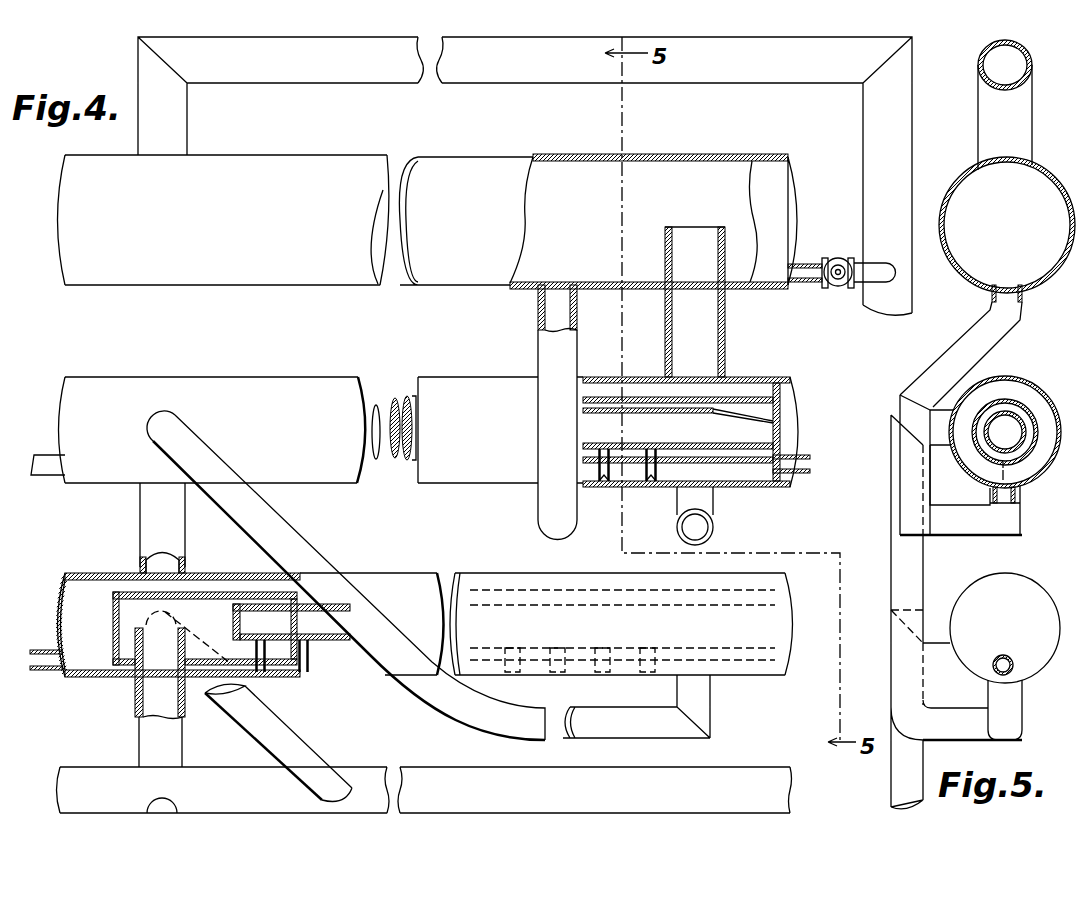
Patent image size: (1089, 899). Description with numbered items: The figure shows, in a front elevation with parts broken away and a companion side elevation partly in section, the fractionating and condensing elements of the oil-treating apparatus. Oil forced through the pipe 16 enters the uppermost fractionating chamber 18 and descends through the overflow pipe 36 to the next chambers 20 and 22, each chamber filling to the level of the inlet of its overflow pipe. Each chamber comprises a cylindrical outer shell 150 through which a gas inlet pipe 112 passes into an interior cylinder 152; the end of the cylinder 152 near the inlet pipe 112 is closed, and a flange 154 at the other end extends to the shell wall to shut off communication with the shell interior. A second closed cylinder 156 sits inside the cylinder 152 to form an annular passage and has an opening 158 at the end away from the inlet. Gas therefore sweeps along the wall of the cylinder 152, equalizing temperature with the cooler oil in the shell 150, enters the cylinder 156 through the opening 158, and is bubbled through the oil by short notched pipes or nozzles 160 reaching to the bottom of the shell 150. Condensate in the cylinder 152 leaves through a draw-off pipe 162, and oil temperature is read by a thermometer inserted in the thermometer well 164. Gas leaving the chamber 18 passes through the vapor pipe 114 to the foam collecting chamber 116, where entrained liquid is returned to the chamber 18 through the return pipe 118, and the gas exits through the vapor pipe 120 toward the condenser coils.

In FIG. 4, the vapor pipe 120 is at (353, 85).
In FIG. 5, the vapor pipe 120 is at (977, 90).
In FIG. 4, the foam collecting chamber 116 is at (454, 166).
In FIG. 5, the foam collecting chamber 116 is at (970, 178).
In FIG. 4, the return pipe 118 is at (545, 349).
In FIG. 5, the return pipe 118 is at (993, 339).
In FIG. 4, the vapor pipe 114 is at (726, 327).
In FIG. 4, the fractionating chamber 18 is at (283, 381).
In FIG. 5, the fractionating chamber 18 is at (1024, 388).
In FIG. 4, the interior cylinder 152 is at (405, 395).
In FIG. 5, the interior cylinder 152 is at (1029, 458).
In FIG. 4, the second closed cylinder 156 is at (394, 460).
In FIG. 5, the second closed cylinder 156 is at (1030, 410).
In FIG. 4, the flange 154 is at (792, 395).
In FIG. 4, the opening 158 is at (722, 412).
In FIG. 4, the draw-off pipe 162 is at (803, 462).
In FIG. 5, the draw-off pipe 162 is at (1008, 660).
In FIG. 4, the short pipes or nozzles 160 is at (646, 472).
In FIG. 5, the short pipes or nozzles 160 is at (992, 470).
In FIG. 4, the pipe 16 is at (715, 511).
In FIG. 4, the thermometer well 164 is at (49, 476).
In FIG. 4, the gas inlet pipe 112 is at (145, 516).
In FIG. 4, the overflow pipe 36 is at (277, 524).
In FIG. 5, the overflow pipe 36 is at (923, 558).
In FIG. 4, the cylindrical outer shell 150 is at (86, 574).
In FIG. 5, the cylindrical outer shell 150 is at (994, 383).
In FIG. 4, the fractionating chamber 20 is at (380, 572).
In FIG. 5, the fractionating chamber 20 is at (1024, 592).
In FIG. 4, the fractionating chamber 22 is at (422, 772).